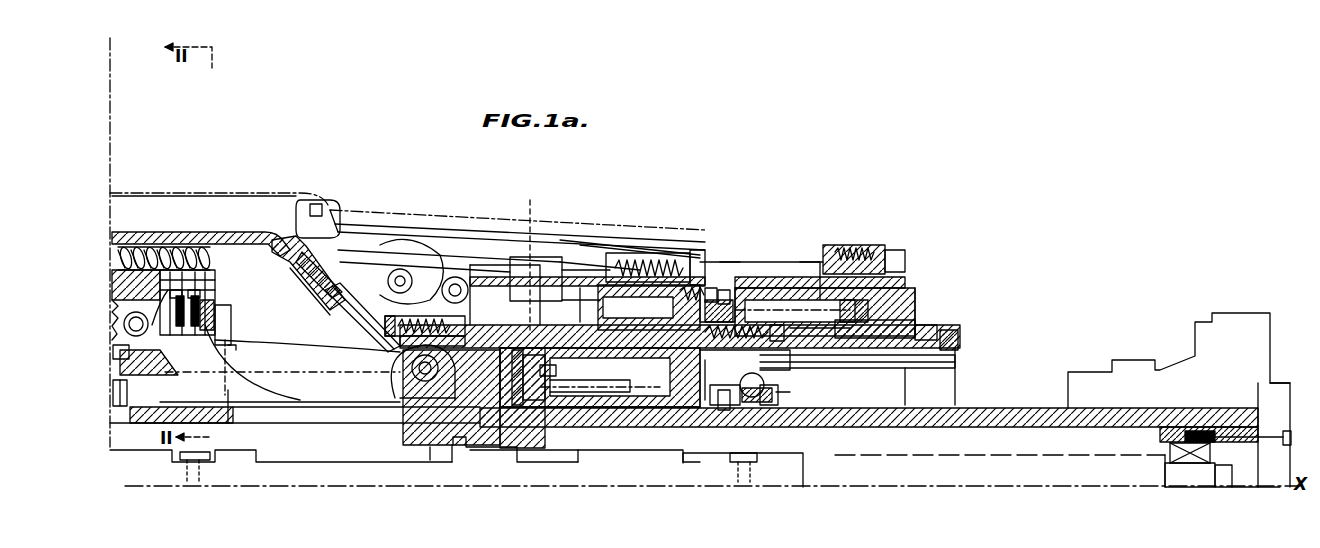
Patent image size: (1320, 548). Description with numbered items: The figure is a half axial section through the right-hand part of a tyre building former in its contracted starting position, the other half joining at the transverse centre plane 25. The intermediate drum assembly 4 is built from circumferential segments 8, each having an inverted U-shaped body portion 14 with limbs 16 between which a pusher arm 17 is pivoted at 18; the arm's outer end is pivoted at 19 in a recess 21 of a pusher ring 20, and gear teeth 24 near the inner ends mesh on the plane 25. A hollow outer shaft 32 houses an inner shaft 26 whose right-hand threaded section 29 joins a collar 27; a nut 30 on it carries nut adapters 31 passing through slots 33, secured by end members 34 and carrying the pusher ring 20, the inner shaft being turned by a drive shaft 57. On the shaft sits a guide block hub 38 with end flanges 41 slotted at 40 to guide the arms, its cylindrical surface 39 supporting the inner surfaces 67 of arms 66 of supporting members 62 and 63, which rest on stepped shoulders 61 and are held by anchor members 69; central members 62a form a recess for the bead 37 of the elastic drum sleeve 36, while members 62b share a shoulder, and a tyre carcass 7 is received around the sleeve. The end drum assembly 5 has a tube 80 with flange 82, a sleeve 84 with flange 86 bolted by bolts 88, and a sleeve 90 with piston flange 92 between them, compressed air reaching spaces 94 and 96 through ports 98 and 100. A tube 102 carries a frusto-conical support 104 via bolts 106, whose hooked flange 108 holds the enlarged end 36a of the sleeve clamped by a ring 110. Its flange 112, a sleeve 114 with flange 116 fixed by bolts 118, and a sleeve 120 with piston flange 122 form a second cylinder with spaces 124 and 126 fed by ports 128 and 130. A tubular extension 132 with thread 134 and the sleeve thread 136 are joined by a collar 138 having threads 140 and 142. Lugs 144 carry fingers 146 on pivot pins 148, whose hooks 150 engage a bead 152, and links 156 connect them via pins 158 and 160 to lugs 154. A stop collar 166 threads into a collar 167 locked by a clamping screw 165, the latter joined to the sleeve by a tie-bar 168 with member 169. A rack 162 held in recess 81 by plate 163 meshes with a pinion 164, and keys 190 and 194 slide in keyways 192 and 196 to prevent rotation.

The intermediate drum assembly 4 is at (258, 186).
The right-hand end drum assembly 5 is at (780, 204).
The tyre carcass 7 is at (292, 190).
The segment 8 is at (200, 282).
The body portion 14 is at (194, 298).
The limb 16 is at (232, 342).
The pusher arm 17 is at (292, 380).
The pivot 18 is at (128, 314).
The pivot 19 is at (418, 372).
The pusher ring 20 is at (404, 445).
The recess 21 is at (415, 395).
The gear teeth 24 is at (108, 325).
The transverse centre plane 25 is at (110, 68).
The inner shaft 26 is at (668, 474).
The collar 27 is at (232, 476).
The right-hand screw-threaded shaft section 29 is at (428, 455).
The nut 30 is at (488, 470).
The nut adapter 31 is at (430, 450).
The hollow outer shaft 32 is at (1018, 396).
The slot 33 is at (711, 464).
The end member 34 is at (460, 448).
The elastic drum sleeve 36 is at (186, 232).
The enlarged end portion 36a is at (300, 290).
The circumferential bead 37 is at (110, 240).
The hub 38 is at (136, 420).
The cylindrical surface 39 is at (112, 345).
The slot 40 is at (236, 347).
The end flange 41 is at (230, 320).
The drive shaft 57 is at (1114, 462).
The positioning shoulder 61 is at (160, 315).
The intermediate supporting member 62 is at (196, 250).
The central supporting member 62a is at (122, 246).
The supporting member sharing common shoulder 62b is at (145, 246).
The end supporting member 63 is at (208, 270).
The arm 66 is at (208, 290).
The radially inner surface 67 is at (140, 372).
The end anchor member 69 is at (192, 355).
The tube 80 is at (702, 408).
The recess 81 is at (540, 405).
The outwardly-projecting flange 82 is at (540, 360).
The sleeve 84 is at (890, 360).
The inwardly-projecting flange 86 is at (770, 378).
The bolt 88 is at (768, 400).
The sleeve 90 is at (614, 355).
The inwardly-projecting flange 92 is at (668, 360).
The cylinder space 94 is at (752, 405).
The cylinder space 96 is at (604, 405).
The port 98 is at (722, 400).
The port 100 is at (552, 385).
The tube 102 is at (500, 318).
The frusto-conical support 104 is at (360, 318).
The bolt 106 is at (384, 334).
The hooked flange 108 is at (288, 262).
The ring 110 is at (300, 286).
The outwardly-projecting flange 112 is at (544, 300).
The sleeve 114 is at (712, 296).
The inwardly-projecting flange 116 is at (740, 280).
The bolt 118 is at (768, 330).
The sleeve 120 is at (636, 290).
The inwardly-projecting flange 122 is at (693, 305).
The cylinder space 124 is at (608, 296).
The cylinder space 126 is at (730, 296).
The port 128 is at (614, 305).
The port 130 is at (745, 292).
The tubular extension 132 is at (860, 302).
The internally screw-threaded portion 134 is at (850, 318).
The externally screw-threaded portion 136 is at (958, 336).
The collar 138 is at (935, 333).
The externally screw-threaded portion 140 is at (912, 326).
The internally screw-threaded portion 142 is at (908, 360).
The lug 144 is at (590, 262).
The bead core locating and supporting finger 146 is at (456, 238).
The pivot pin 148 is at (672, 262).
The outwardly-turned portion 150 is at (305, 219).
The bead 152 is at (338, 210).
The lug 154 is at (494, 262).
The link 156 is at (468, 290).
The pivot pin 158 is at (392, 290).
The pivot pin 160 is at (414, 270).
The toothed rack 162 is at (218, 410).
The plate 163 is at (518, 405).
The toothed pinion 164 is at (112, 392).
The clamping screw 165 is at (898, 260).
The externally screw-threaded collar 166 is at (908, 296).
The internally screw-threaded collar 167 is at (868, 250).
The tie-bar 168 is at (804, 262).
The radially inwardly-directed member 169 is at (545, 262).
The key 190 is at (395, 348).
The keyway 192 is at (565, 302).
The key 194 is at (500, 430).
The keyway 196 is at (540, 255).